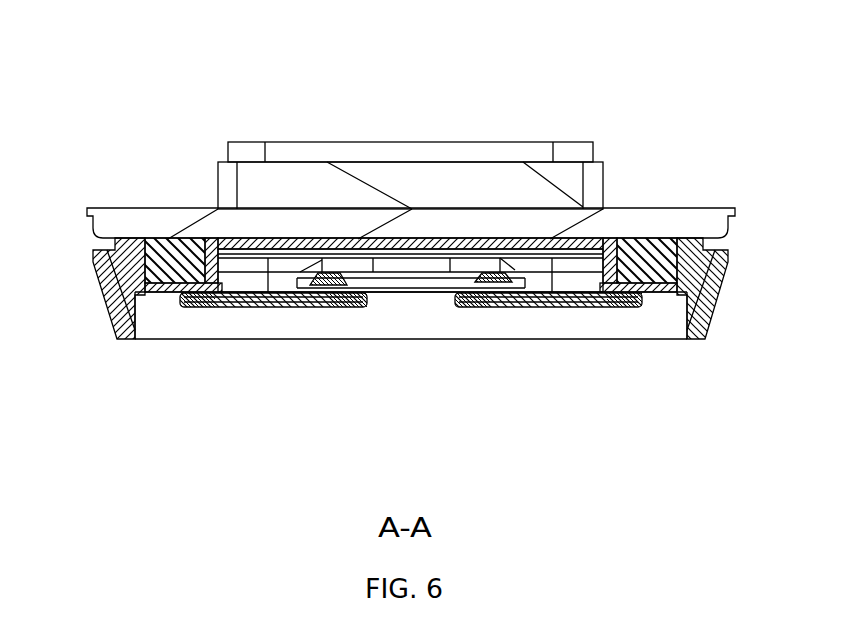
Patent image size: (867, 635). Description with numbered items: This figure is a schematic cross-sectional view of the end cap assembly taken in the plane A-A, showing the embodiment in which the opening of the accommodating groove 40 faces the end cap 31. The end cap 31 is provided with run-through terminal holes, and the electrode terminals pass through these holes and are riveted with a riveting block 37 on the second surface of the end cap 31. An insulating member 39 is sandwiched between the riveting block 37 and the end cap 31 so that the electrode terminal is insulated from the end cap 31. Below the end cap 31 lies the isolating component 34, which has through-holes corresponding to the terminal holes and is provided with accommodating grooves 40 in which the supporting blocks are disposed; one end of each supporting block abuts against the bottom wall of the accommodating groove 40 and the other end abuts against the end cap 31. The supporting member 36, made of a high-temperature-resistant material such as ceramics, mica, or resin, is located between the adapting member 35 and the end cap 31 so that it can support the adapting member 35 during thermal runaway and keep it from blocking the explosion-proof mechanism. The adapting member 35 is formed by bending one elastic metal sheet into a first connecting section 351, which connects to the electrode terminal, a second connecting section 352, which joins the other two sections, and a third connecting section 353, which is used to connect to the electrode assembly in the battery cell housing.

The end cap 31 is at (432, 223).
The isolating component 34 is at (497, 265).
The adapting member 35 is at (411, 367).
The first connecting section 351 is at (385, 262).
The second connecting section 352 is at (450, 258).
The third connecting section 353 is at (365, 422).
The supporting member 36 is at (672, 240).
The riveting block 37 is at (363, 153).
The insulating member 39 is at (300, 180).
The accommodating groove 40 is at (632, 283).